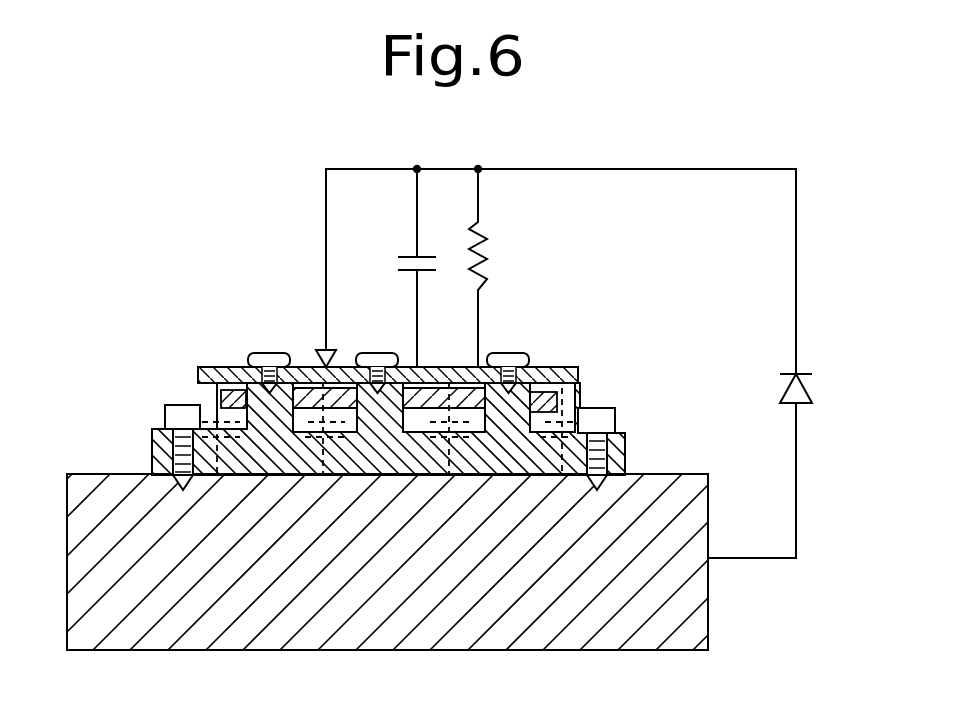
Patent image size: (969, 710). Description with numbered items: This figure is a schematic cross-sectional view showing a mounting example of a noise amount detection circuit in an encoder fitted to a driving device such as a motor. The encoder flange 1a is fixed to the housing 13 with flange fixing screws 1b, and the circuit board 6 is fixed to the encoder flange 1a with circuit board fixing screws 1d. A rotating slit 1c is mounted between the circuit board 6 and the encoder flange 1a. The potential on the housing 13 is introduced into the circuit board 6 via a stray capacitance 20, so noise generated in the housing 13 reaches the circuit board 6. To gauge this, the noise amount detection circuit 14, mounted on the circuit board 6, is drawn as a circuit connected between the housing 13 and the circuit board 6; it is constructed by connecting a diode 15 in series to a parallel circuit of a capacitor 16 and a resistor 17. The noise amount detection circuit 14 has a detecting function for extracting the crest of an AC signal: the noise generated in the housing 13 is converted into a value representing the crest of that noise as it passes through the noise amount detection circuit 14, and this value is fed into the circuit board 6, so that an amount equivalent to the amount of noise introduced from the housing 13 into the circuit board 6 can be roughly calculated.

The encoder flange 1a is at (152, 445).
The flange fixing screws 1b is at (165, 408).
The rotating slit 1c is at (215, 395).
The circuit board fixing screws 1d is at (272, 353).
The circuit board 6 is at (205, 367).
The housing 13 is at (67, 580).
The noise amount detection circuit 14 is at (808, 165).
The diode 15 is at (818, 377).
The capacitor 16 is at (402, 250).
The resistor 17 is at (496, 255).
The stray capacitance 20 is at (575, 399).